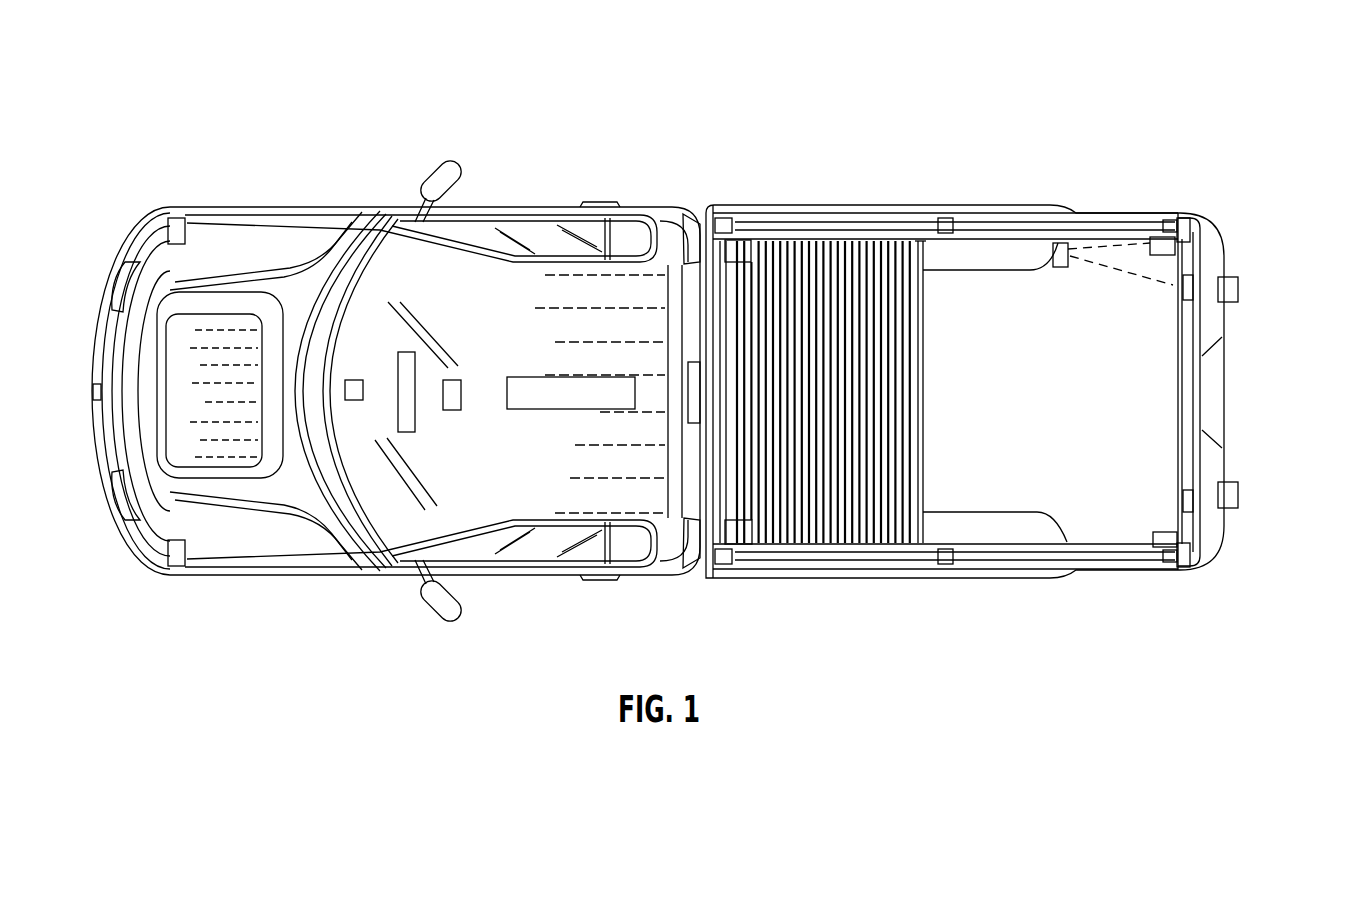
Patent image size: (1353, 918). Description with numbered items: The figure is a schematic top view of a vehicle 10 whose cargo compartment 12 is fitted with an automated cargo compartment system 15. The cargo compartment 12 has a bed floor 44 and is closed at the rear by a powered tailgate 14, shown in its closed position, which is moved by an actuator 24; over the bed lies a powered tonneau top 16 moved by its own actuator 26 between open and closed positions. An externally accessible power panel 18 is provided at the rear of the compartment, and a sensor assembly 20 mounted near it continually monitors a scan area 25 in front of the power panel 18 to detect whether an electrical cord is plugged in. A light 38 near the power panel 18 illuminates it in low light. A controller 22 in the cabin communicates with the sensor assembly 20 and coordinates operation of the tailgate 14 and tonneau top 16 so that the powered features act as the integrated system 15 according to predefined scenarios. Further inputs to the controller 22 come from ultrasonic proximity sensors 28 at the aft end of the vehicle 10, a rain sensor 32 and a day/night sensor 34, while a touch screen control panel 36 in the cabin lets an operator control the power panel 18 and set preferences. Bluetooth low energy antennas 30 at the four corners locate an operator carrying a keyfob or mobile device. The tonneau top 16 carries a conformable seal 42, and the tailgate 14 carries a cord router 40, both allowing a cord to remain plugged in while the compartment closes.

The vehicle 10 is at (993, 56).
The cargo compartment 12 is at (976, 206).
The powered tailgate 14 is at (1202, 418).
The integrated system 15 is at (1231, 102).
The powered tonneau top 16 is at (855, 246).
The power panel 18 is at (1130, 213).
The sensor assembly 20 is at (1062, 243).
The controller 22 is at (572, 410).
The actuator 24 is at (1163, 532).
The scan area 25 is at (1100, 260).
The actuator 26 is at (742, 244).
The proximity sensors 28 is at (1240, 290).
The Bluetooth low energy antennas 30 is at (183, 212).
The rain sensor 32 is at (455, 412).
The day/night sensor 34 is at (355, 378).
The control panel 36 is at (410, 350).
The light 38 is at (1160, 266).
The cord router 40 is at (1194, 280).
The seal 42 is at (912, 246).
The bed floor 44 is at (1012, 410).